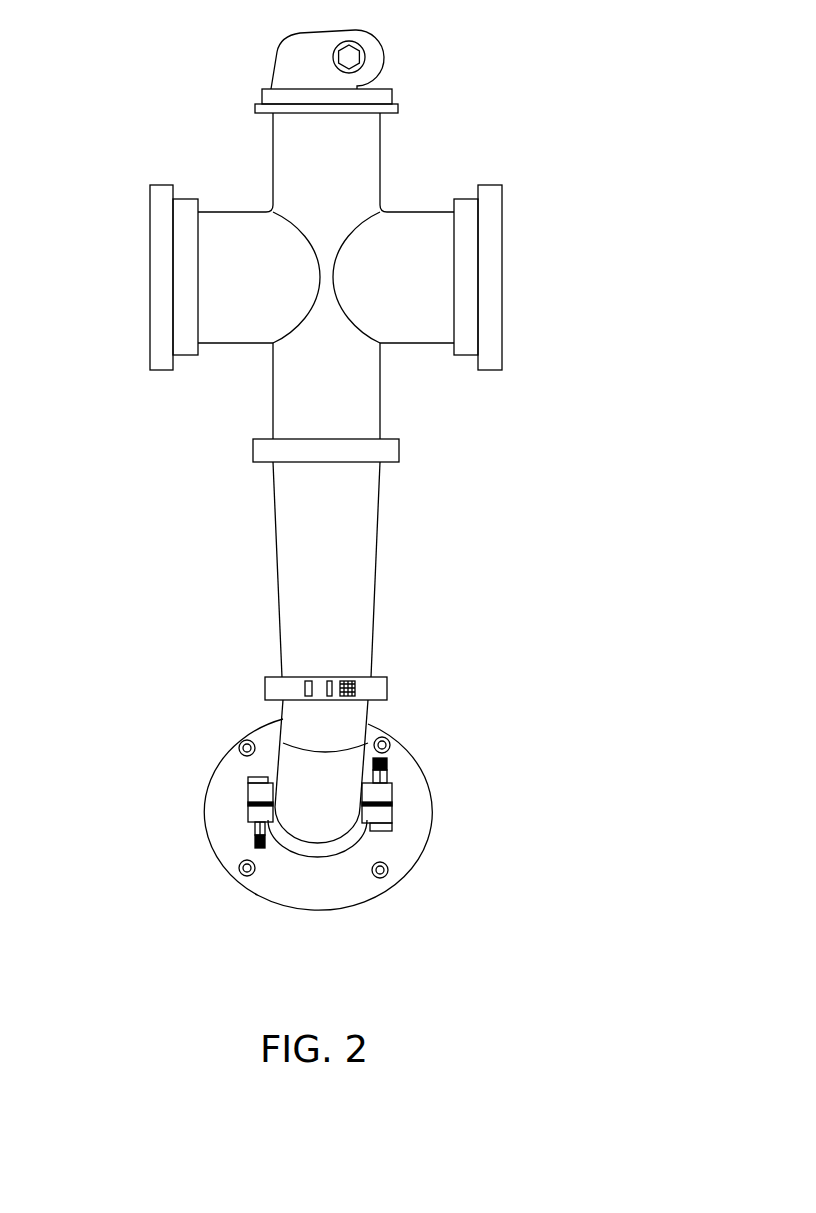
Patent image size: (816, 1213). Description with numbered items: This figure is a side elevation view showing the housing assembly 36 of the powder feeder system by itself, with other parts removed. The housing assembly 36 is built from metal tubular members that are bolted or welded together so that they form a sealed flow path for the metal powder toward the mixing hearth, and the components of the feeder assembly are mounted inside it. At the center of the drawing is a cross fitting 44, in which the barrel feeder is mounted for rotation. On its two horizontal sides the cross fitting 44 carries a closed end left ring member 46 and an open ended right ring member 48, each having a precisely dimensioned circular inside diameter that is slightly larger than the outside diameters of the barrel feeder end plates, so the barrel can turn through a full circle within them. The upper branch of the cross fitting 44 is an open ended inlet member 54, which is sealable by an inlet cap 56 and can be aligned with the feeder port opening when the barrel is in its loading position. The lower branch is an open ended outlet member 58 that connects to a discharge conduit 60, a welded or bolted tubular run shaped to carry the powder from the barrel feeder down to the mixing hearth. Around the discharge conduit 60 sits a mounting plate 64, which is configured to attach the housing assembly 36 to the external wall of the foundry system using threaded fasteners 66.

The housing assembly 36 is at (455, 163).
The cross fitting 44 is at (405, 307).
The left ring member 46 is at (160, 291).
The right ring member 48 is at (492, 274).
The inlet member 54 is at (380, 96).
The inlet cap 56 is at (373, 52).
The outlet member 58 is at (292, 403).
The discharge conduit 60 is at (357, 546).
The mounting plate 64 is at (413, 803).
The threaded fasteners 66 is at (383, 878).